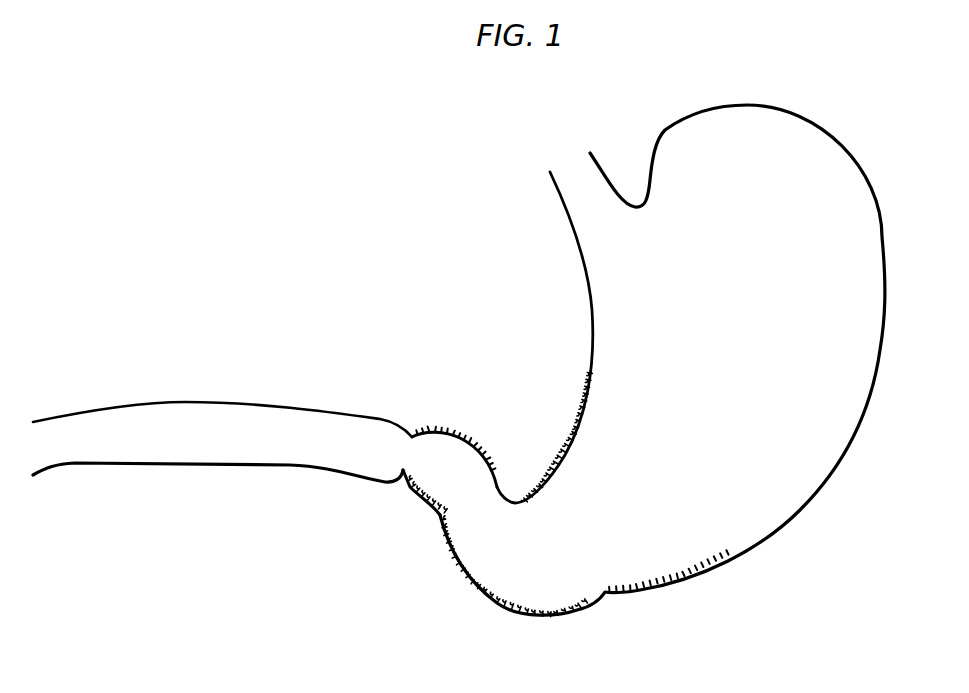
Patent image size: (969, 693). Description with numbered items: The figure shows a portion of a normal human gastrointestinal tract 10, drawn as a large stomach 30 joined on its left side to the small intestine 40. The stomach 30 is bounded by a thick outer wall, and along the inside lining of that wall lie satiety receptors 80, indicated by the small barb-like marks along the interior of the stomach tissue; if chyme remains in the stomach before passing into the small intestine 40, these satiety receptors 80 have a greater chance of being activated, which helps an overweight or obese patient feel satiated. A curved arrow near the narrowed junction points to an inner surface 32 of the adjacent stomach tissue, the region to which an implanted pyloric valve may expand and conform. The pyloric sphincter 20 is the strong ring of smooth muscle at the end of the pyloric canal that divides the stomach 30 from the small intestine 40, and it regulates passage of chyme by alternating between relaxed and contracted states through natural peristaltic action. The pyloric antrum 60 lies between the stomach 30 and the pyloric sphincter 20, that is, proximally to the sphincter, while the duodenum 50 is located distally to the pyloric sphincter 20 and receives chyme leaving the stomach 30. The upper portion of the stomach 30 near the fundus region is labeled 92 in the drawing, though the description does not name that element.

The gastrointestinal tract 10 is at (302, 163).
The pyloric sphincter 20 is at (412, 437).
The stomach 30 is at (885, 238).
The inner surface 32 is at (492, 474).
The small intestine 40 is at (115, 404).
The duodenum 50 is at (355, 443).
The pyloric antrum 60 is at (440, 470).
The satiety receptors 80 is at (592, 308).
The fundus 92 is at (585, 188).